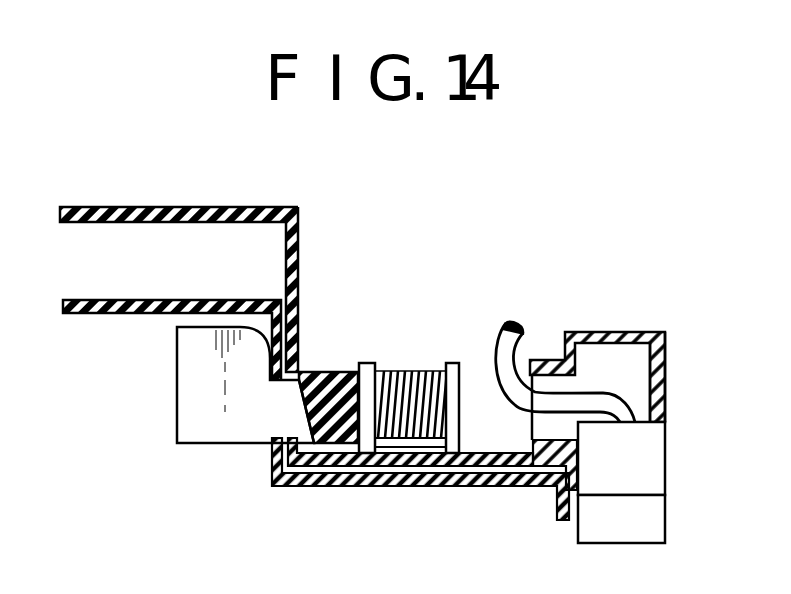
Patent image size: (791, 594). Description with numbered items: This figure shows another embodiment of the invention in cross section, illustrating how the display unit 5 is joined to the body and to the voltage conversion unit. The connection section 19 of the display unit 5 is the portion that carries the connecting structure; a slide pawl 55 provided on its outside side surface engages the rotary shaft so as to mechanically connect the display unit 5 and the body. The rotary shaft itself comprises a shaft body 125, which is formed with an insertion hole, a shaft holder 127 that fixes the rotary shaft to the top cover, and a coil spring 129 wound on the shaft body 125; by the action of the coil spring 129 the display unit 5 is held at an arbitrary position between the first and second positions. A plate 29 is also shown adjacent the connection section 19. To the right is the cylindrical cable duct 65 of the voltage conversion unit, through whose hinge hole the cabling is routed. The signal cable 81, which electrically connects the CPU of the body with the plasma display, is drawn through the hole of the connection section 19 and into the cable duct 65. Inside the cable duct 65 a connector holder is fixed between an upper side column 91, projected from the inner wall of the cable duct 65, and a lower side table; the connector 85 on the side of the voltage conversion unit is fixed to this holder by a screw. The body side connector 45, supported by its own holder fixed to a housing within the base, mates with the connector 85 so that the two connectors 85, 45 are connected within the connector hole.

The display unit 5 is at (197, 207).
The connection section 19 is at (287, 264).
The lower plate 29 is at (143, 300).
The slide pawl 55 is at (293, 422).
The shaft body 125 is at (340, 372).
The coil spring 129 is at (400, 368).
The shaft holder 127 is at (452, 363).
The cable duct 65 is at (607, 332).
The upper side column 91 is at (666, 388).
The signal cable 81 is at (508, 321).
The connector 85 is at (645, 450).
The body side connector 45 is at (658, 515).